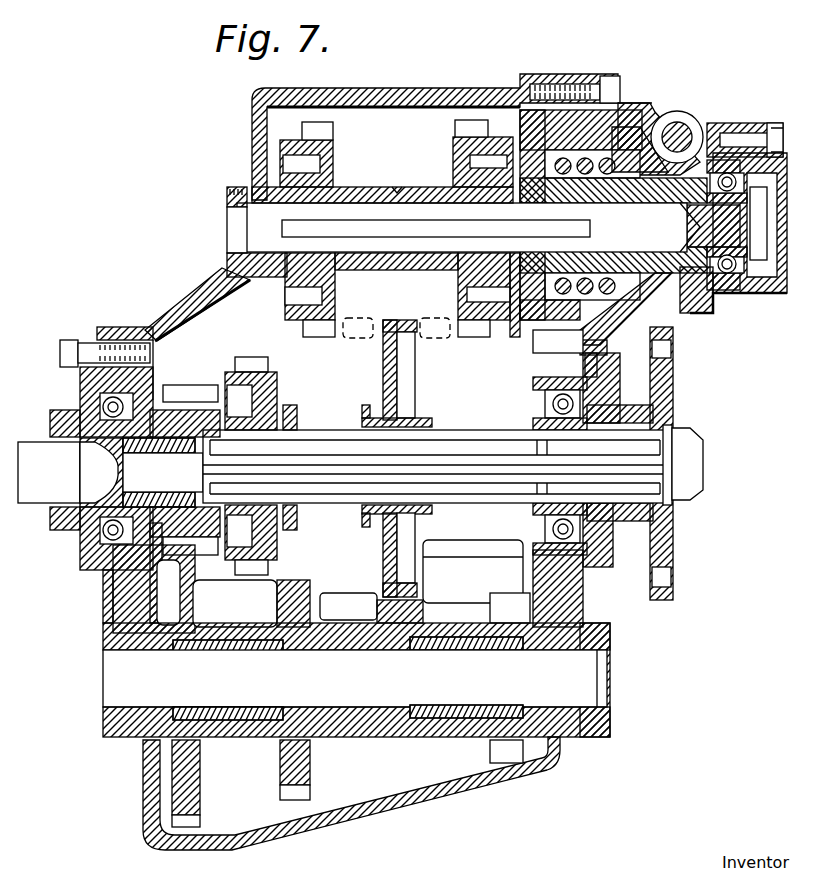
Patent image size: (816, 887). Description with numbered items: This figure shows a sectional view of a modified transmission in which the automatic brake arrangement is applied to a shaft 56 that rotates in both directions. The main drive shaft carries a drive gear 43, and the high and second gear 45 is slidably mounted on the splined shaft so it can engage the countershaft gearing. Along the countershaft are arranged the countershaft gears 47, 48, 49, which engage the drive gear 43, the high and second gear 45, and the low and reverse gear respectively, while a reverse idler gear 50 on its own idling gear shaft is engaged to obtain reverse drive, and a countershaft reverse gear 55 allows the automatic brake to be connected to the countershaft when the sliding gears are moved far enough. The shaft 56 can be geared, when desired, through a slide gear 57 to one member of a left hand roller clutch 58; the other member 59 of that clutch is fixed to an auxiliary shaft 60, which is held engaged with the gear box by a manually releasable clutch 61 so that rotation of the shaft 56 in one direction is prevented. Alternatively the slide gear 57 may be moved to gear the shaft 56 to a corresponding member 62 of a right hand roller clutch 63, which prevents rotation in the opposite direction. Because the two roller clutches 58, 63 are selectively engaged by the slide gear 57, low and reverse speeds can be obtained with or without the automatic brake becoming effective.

The drive gear 43 is at (185, 395).
The high and second gear 45 is at (268, 370).
The countershaft gear 47 is at (202, 600).
The countershaft gear 48 is at (300, 572).
The countershaft low speed gear 49 is at (345, 605).
The reverse idler gear 50 is at (475, 548).
The countershaft reverse gear 55 is at (557, 600).
The shaft 56 is at (447, 447).
The slide gear 57 is at (398, 374).
The left hand roller clutch 58 is at (308, 163).
The other member of left hand roller clutch 59 is at (288, 277).
The auxiliary shaft 60 is at (368, 220).
The manually releasable clutch 61 is at (600, 133).
The corresponding member of right hand roller clutch 62 is at (510, 312).
The right hand roller clutch 63 is at (472, 276).